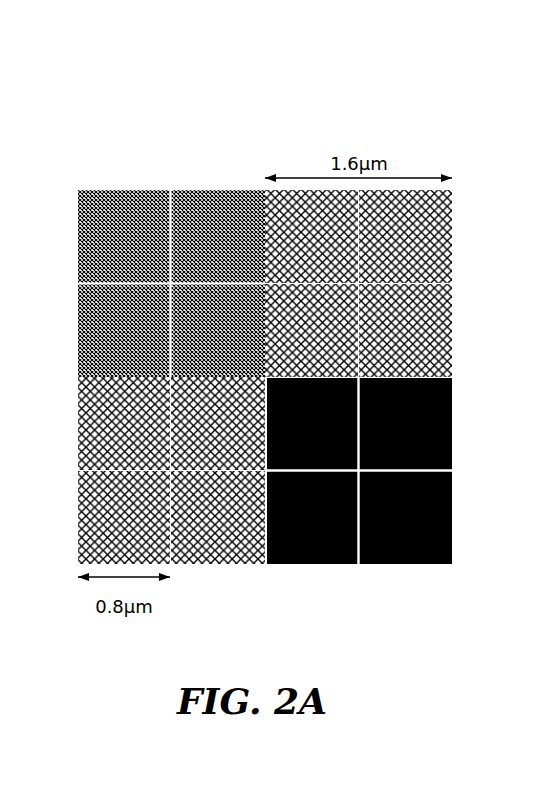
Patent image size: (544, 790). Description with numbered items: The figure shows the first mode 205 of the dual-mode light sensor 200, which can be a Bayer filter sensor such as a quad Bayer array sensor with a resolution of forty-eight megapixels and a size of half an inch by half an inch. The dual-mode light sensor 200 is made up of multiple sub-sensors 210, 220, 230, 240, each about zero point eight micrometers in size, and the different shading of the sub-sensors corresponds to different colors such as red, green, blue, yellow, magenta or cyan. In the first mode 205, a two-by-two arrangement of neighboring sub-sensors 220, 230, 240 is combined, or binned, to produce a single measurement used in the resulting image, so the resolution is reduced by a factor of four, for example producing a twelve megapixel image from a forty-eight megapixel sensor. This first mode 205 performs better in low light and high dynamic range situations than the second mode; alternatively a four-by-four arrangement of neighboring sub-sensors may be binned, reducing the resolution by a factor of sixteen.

The dual-mode light sensor 200 is at (274, 294).
The first mode 205 is at (153, 200).
The sub-sensor 210 is at (358, 283).
The sub-sensor 220 is at (218, 237).
The sub-sensor 230 is at (124, 237).
The sub-sensor 240 is at (124, 330).